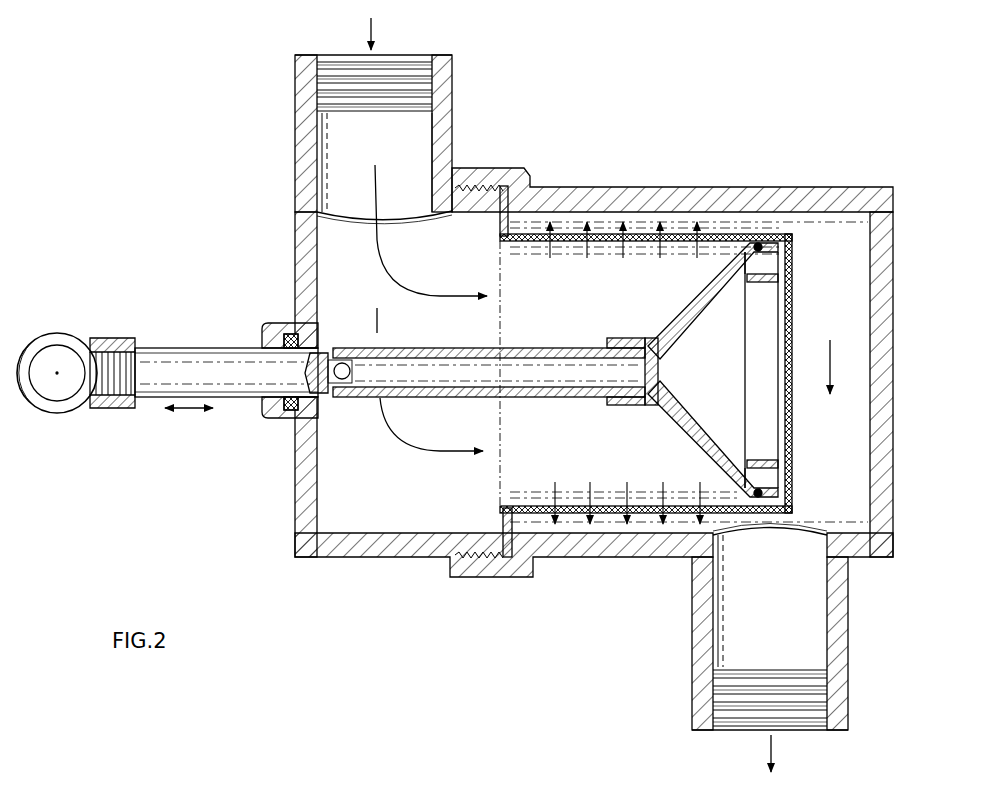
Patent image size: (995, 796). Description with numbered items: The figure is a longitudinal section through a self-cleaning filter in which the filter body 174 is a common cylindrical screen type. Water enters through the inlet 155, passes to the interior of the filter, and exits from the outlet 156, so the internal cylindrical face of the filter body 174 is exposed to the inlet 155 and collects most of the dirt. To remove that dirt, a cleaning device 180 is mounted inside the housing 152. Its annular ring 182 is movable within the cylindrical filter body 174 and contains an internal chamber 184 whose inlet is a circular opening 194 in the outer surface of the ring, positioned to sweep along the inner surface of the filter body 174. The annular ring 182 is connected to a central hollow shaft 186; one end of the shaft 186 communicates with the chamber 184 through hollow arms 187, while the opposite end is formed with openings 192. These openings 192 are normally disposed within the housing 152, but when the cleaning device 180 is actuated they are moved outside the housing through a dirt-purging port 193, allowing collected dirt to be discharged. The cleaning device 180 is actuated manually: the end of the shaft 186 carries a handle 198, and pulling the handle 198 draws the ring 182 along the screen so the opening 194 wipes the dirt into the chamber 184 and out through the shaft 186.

The housing 152 is at (372, 558).
The inlet 155 is at (323, 56).
The outlet 156 is at (792, 597).
The filter body 174 is at (597, 233).
The cleaning device 180 is at (725, 327).
The annular ring 182 is at (748, 246).
The internal chamber 184 is at (766, 263).
The central hollow shaft 186 is at (416, 348).
The hollow arms 187 is at (697, 330).
The openings 192 is at (340, 348).
The dirt-purging port 193 is at (261, 342).
The circular opening 194 is at (760, 245).
The handle 198 is at (52, 333).